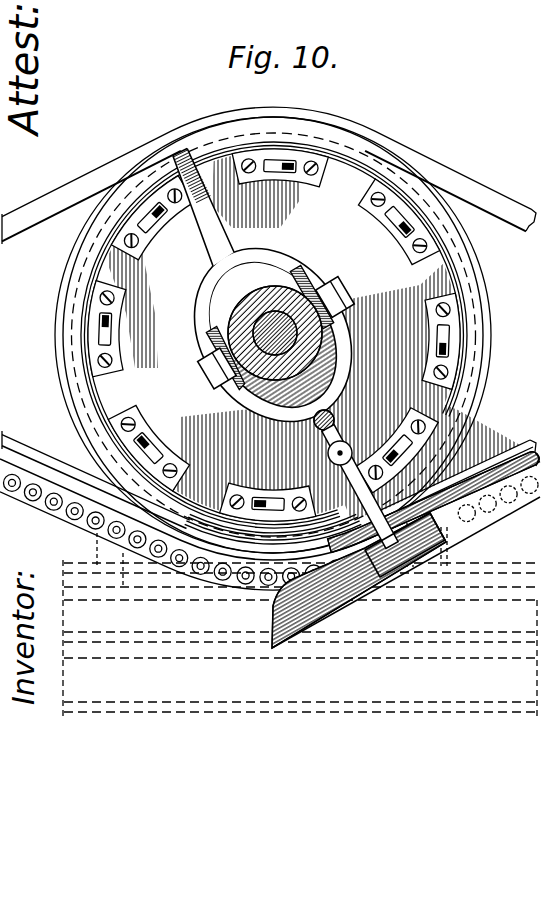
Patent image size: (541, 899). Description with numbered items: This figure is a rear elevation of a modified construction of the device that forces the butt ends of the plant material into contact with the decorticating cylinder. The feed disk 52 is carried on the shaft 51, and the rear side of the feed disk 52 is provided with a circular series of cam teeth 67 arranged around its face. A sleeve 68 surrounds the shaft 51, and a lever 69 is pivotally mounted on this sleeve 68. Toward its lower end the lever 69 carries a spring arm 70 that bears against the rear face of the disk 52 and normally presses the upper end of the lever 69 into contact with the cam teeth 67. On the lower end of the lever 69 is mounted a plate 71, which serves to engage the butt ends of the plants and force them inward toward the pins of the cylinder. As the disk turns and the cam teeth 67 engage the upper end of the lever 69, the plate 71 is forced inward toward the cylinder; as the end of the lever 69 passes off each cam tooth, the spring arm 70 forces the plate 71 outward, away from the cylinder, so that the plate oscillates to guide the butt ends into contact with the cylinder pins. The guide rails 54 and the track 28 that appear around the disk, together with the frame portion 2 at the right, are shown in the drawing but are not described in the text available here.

The frame 2 is at (540, 316).
The roller chain track 28 is at (523, 471).
The shaft 51 is at (262, 327).
The feed disk 52 is at (287, 335).
The guide rail 54 is at (49, 197).
The cam teeth 67 is at (285, 174).
The sleeve 68 is at (265, 292).
The lever 69 is at (300, 268).
The spring arm 70 is at (374, 493).
The plate 71 is at (467, 530).